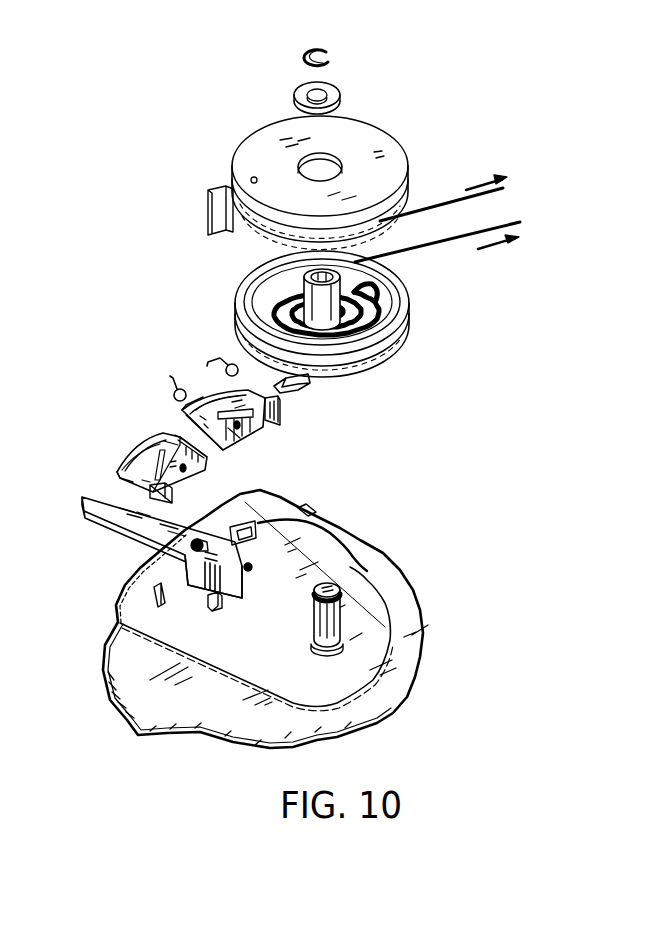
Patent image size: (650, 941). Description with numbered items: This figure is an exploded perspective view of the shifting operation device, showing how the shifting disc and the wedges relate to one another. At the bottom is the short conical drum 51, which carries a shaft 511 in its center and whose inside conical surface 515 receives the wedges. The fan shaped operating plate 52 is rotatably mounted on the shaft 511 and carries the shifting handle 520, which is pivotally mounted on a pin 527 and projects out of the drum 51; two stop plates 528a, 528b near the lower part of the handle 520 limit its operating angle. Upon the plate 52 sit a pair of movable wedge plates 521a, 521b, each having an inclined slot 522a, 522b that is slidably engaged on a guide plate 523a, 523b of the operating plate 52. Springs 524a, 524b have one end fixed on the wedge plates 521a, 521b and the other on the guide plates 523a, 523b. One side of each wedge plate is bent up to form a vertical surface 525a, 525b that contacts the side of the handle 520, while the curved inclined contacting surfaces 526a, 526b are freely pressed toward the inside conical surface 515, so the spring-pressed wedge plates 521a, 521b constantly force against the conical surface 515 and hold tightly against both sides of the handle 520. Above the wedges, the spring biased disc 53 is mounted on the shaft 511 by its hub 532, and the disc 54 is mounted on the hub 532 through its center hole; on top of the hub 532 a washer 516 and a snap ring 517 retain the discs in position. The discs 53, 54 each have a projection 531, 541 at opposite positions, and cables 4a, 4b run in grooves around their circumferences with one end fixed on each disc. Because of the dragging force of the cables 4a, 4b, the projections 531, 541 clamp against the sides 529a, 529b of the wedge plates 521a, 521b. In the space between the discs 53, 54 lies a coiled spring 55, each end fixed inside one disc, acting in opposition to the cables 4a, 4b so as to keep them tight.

The snap ring 517 is at (330, 50).
The washer 516 is at (340, 91).
The spring biased disc 54 is at (380, 145).
The projection 541 is at (206, 214).
The cable 4b is at (442, 203).
The cable 4a is at (497, 225).
The hub 532 is at (292, 292).
The coiled spring 55 is at (405, 299).
The spring biased disc 53 is at (410, 329).
The projection 531 is at (300, 384).
The wedge plate 521a is at (173, 483).
The wedge plate 521b is at (258, 430).
The inclined slot 522a is at (138, 450).
The inclined slot 522b is at (248, 436).
The guide plate 523a is at (154, 597).
The guide plate 523b is at (312, 511).
The spring 524a is at (174, 394).
The spring 524b is at (228, 364).
The vertical surface 525a is at (185, 437).
The vertical surface 525b is at (240, 462).
The curved inclined contacting surface 526a is at (137, 458).
The curved inclined contacting surface 526b is at (203, 400).
The pin 527 is at (195, 587).
The stop plate 528a is at (215, 609).
The stop plate 528b is at (251, 566).
The side of wedge plate 529a is at (148, 490).
The side of wedge plate 529b is at (281, 410).
The shifting handle 520 is at (112, 520).
The conical drum 51 is at (367, 568).
The shaft 511 is at (330, 613).
The operating plate 52 is at (383, 660).
The inside conical surface 515 is at (110, 658).